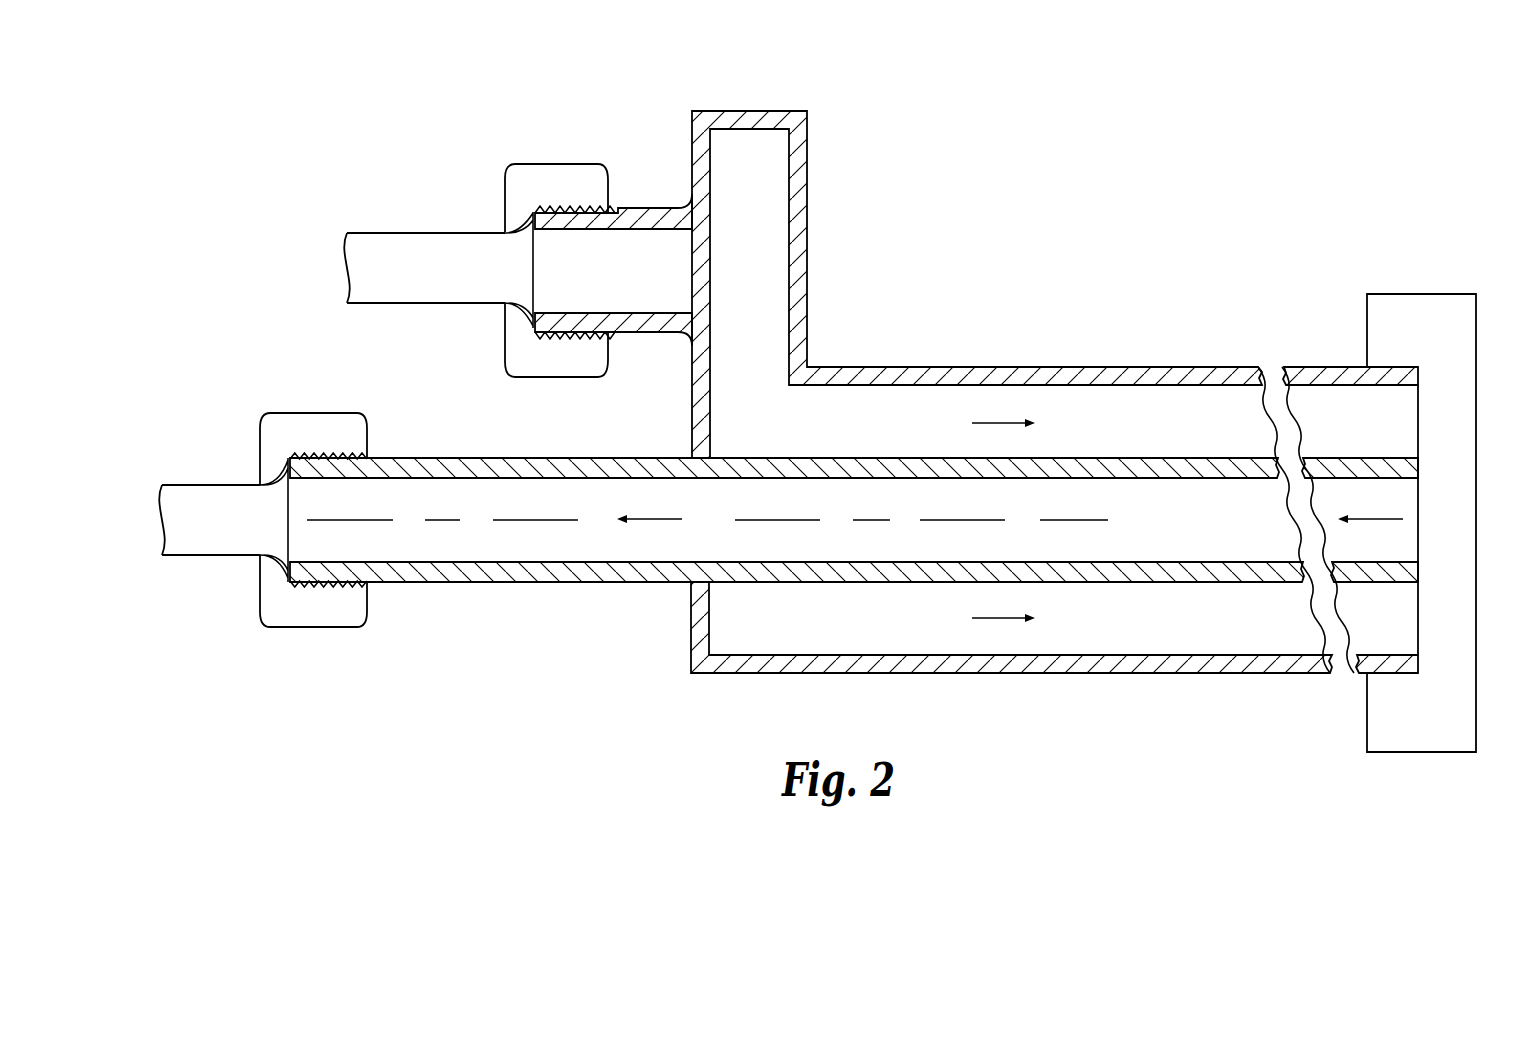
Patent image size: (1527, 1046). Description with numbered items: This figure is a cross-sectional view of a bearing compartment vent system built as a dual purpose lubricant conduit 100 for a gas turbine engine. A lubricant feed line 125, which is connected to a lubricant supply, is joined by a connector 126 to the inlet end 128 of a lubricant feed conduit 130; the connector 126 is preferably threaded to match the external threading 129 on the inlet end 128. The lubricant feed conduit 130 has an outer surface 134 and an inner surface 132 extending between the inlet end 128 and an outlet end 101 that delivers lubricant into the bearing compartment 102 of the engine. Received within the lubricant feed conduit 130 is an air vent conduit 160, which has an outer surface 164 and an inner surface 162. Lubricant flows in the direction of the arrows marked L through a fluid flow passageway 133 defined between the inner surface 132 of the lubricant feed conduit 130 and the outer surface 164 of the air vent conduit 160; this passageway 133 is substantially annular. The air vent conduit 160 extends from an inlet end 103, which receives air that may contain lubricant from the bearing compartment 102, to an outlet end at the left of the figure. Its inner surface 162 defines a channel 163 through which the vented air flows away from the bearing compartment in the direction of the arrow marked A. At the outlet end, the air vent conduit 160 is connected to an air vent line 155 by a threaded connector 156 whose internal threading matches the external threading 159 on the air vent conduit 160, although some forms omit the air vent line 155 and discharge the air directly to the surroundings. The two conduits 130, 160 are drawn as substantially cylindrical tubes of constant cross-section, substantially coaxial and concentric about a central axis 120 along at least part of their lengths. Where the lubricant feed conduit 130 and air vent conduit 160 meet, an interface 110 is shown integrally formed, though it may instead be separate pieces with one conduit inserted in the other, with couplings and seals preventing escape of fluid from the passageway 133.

The dual purpose lubricant conduit 100 is at (1178, 226).
The outlet end 101 is at (1428, 367).
The bearing compartment 102 is at (1382, 737).
The inlet end 103 is at (1418, 522).
The interface 110 is at (690, 455).
The central axis 120 is at (532, 555).
The lubricant feed line 125 is at (397, 233).
The connector 126 is at (528, 163).
The inlet end 128 is at (621, 118).
The external threading 129 is at (587, 206).
The lubricant feed conduit 130 is at (929, 330).
The inner surface 132 is at (1128, 386).
The fluid flow passageway 133 is at (823, 408).
The outer surface 134 is at (1020, 367).
The air vent line 155 is at (205, 558).
The threaded connector 156 is at (340, 413).
The external threading 159 is at (335, 588).
The air vent conduit 160 is at (485, 616).
The inner surface 162 is at (1243, 478).
The channel 163 is at (1177, 535).
The outer surface 164 is at (1201, 458).